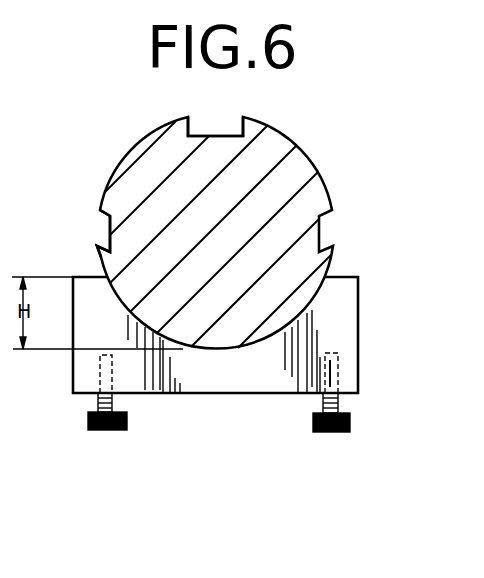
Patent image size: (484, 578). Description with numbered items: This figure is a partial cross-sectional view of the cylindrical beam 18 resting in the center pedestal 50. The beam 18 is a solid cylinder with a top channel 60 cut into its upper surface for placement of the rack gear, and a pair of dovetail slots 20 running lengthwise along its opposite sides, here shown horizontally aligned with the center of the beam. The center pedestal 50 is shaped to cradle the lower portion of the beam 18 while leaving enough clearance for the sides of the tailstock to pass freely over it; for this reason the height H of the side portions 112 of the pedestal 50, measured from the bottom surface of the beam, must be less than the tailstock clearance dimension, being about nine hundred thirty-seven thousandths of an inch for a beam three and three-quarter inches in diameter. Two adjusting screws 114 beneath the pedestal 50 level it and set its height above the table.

The cylindrical beam 18 is at (291, 132).
The dovetail slots 20 is at (108, 229).
The top channel 60 is at (212, 135).
The side portions 112 is at (352, 289).
The center pedestal 50 is at (90, 367).
The adjusting screws 114 is at (127, 418).